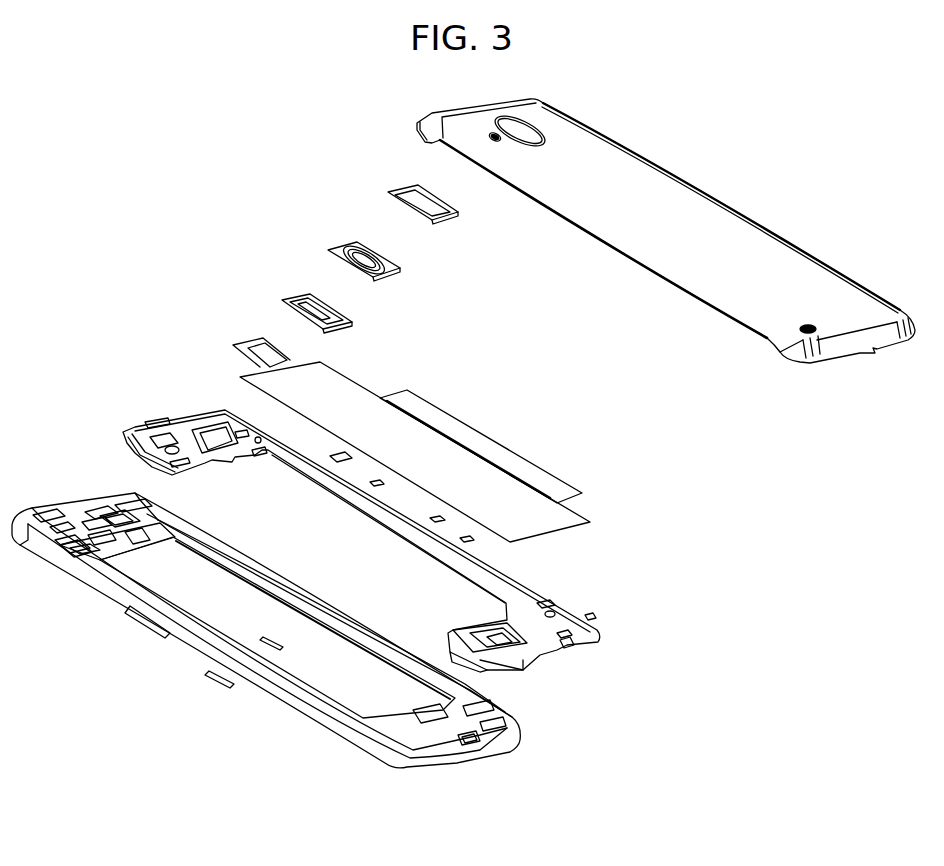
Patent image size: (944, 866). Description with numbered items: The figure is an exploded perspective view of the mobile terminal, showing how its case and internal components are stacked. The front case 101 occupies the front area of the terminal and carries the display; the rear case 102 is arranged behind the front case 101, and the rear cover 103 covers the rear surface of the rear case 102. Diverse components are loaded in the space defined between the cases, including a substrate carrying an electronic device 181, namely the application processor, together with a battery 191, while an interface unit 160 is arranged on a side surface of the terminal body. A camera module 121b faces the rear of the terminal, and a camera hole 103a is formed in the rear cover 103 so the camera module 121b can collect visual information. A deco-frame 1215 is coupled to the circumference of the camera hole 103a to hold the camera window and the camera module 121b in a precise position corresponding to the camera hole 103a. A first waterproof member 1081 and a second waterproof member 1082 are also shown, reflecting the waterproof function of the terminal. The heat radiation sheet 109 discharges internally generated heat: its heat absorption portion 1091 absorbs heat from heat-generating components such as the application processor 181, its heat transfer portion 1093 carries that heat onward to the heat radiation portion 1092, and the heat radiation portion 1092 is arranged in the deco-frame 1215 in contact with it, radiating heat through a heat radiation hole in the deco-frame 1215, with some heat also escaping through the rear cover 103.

The front case 101 is at (223, 660).
The rear case 102 is at (139, 428).
The rear cover 103 is at (603, 157).
The camera hole 103a is at (528, 138).
The first waterproof member 1081 is at (388, 195).
The second waterproof member 1082 is at (283, 302).
The deco-frame 1215 is at (328, 252).
The heat radiation sheet 109 is at (411, 437).
The heat absorption portion 1091 is at (492, 457).
The heat radiation portion 1092 is at (287, 350).
The heat transfer portion 1093 is at (335, 388).
The camera module 121b is at (118, 517).
The application processor 181 is at (280, 588).
The battery 191 is at (140, 573).
The interface unit 160 is at (462, 743).